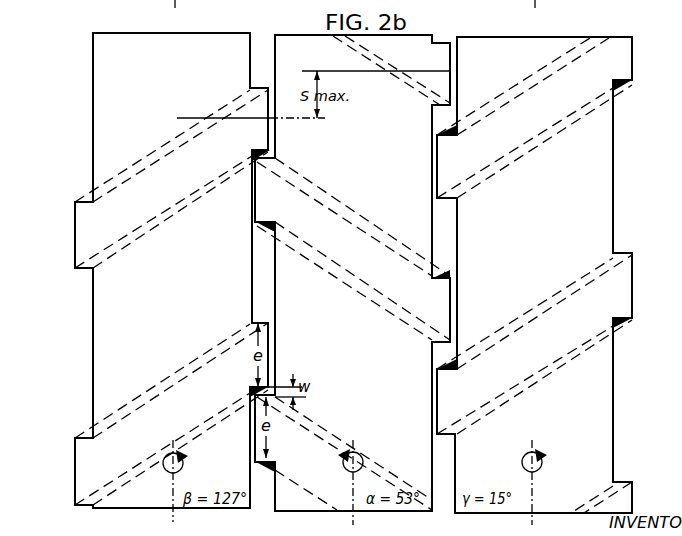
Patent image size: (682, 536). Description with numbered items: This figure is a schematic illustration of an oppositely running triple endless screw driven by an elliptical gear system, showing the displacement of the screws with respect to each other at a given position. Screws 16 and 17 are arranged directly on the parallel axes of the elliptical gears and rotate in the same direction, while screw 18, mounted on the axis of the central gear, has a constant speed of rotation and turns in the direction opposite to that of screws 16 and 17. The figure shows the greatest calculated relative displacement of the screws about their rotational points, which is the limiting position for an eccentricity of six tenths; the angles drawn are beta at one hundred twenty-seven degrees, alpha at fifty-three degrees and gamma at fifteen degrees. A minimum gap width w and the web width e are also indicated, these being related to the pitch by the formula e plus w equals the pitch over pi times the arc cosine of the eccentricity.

The screw 16 is at (93, 346).
The screw 17 is at (613, 376).
The screw 18 is at (440, 0).